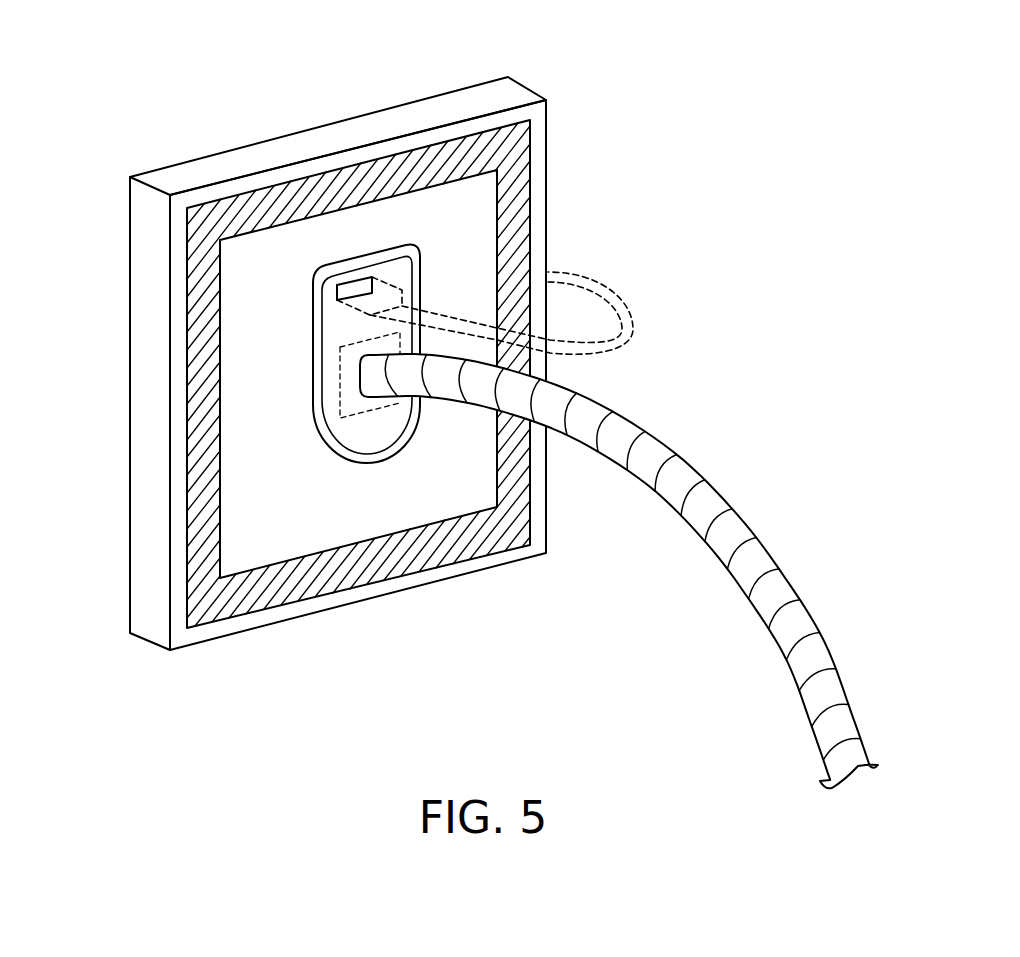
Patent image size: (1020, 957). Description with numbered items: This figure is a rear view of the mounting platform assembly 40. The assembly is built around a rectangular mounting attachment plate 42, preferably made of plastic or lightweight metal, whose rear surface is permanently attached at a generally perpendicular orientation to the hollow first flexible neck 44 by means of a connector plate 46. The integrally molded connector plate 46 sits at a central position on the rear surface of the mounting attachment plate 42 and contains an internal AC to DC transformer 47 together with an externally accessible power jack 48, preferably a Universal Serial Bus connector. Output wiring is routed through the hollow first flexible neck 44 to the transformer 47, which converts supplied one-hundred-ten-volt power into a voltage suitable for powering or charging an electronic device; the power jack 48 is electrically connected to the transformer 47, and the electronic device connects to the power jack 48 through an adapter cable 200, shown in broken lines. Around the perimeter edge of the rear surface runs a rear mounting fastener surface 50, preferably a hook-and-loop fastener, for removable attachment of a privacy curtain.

The mounting platform assembly 40 is at (388, 376).
The mounting attachment plate 42 is at (550, 137).
The first flexible neck 44 is at (728, 499).
The connector plate 46 is at (387, 430).
The AC to DC transformer 47 is at (340, 378).
The power jack 48 is at (359, 280).
The rear mounting fastener surface 50 is at (425, 162).
The adapter cable 200 is at (637, 318).